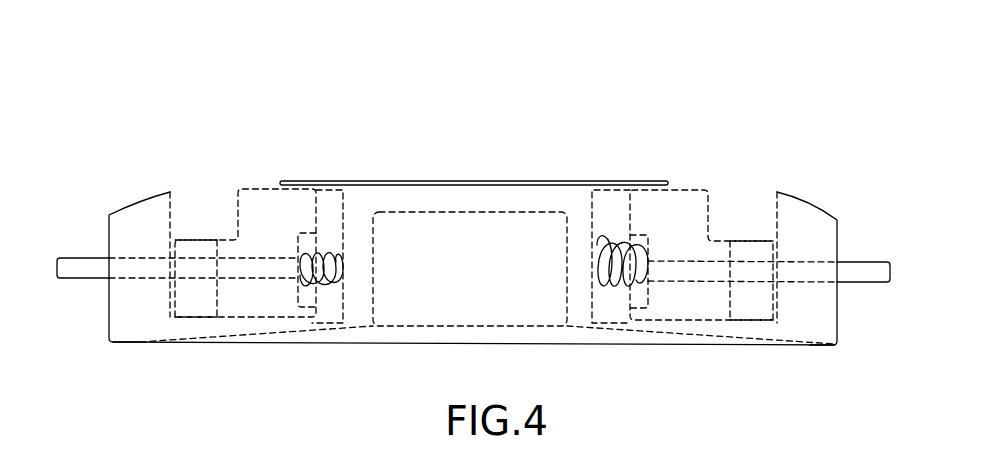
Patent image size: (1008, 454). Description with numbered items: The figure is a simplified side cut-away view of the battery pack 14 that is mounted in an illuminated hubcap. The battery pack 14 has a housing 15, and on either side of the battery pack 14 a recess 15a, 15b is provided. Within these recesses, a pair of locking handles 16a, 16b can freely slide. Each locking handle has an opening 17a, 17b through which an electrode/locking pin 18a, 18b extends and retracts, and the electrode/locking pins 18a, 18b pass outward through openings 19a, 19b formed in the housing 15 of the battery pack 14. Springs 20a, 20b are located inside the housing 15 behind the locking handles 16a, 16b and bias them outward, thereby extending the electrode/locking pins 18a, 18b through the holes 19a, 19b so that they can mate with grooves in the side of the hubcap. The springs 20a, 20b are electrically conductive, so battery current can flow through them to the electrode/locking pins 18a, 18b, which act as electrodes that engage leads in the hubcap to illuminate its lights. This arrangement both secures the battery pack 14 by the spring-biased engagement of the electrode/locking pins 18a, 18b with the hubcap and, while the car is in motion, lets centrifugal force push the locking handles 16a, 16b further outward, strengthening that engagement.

The battery pack 14 is at (482, 68).
The housing 15 is at (503, 200).
The recess 15a is at (330, 202).
The recess 15b is at (612, 210).
The locking handle 16a is at (255, 192).
The locking handle 16b is at (683, 225).
The opening 17a is at (193, 250).
The opening 17b is at (745, 255).
The electrode/locking pin 18a is at (65, 257).
The electrode/locking pin 18b is at (872, 273).
The opening 19a is at (107, 279).
The opening 19b is at (838, 285).
The spring 20a is at (330, 283).
The spring 20b is at (613, 297).